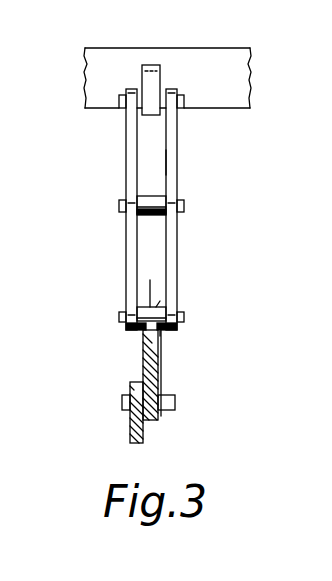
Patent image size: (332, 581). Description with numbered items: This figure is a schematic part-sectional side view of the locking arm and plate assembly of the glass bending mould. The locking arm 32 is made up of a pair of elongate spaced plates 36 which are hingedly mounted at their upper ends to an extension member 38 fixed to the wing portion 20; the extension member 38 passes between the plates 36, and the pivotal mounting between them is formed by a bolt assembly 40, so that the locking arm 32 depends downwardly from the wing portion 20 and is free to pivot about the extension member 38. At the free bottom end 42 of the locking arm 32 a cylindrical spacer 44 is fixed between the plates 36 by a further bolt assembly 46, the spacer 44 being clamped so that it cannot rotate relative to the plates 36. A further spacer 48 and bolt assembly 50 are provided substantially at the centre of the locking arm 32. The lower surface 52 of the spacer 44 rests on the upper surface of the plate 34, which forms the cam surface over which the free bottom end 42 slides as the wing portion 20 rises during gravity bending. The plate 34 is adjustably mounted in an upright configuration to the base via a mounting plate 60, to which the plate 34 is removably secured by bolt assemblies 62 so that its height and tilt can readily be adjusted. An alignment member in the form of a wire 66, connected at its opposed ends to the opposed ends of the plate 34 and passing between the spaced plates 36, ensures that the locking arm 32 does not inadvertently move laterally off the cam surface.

The wing portion 20 is at (163, 55).
The locking arm 32 is at (180, 162).
The plate 34 is at (160, 367).
The elongate spaced plates 36 is at (130, 138).
The extension member 38 is at (152, 70).
The bolt assembly 40 is at (120, 102).
The free bottom end 42 is at (178, 305).
The cylindrical spacer 44 is at (160, 301).
The further bolt assembly 46 is at (120, 317).
The further spacer 48 is at (157, 215).
The bolt assembly 50 is at (120, 207).
The lower surface 52 is at (160, 336).
The mounting plate 60 is at (141, 437).
The bolt assemblies 62 is at (167, 390).
The wire 66 is at (150, 280).